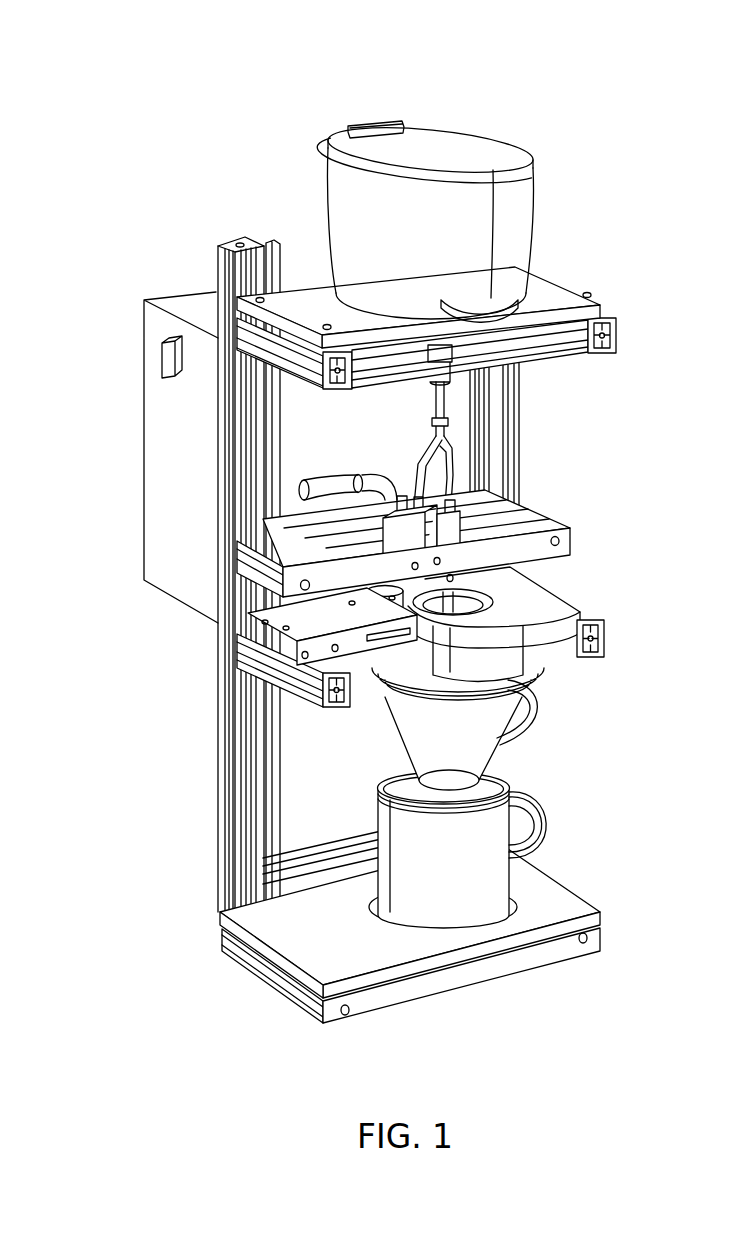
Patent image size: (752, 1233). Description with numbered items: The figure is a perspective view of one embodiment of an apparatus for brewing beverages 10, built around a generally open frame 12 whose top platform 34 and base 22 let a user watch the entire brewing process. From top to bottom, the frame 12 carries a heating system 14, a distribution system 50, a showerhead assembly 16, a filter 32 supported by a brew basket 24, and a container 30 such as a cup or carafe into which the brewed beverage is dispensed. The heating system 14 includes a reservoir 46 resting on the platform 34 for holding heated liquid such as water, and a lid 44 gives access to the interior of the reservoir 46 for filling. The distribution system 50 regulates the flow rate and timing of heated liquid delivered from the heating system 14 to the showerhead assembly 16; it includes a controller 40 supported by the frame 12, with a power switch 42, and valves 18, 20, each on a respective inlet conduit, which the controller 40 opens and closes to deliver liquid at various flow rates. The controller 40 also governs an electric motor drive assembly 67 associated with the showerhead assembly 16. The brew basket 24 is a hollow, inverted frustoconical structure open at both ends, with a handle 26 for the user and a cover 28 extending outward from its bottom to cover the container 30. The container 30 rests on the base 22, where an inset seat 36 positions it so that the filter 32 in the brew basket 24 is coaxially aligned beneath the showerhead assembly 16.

The apparatus for brewing beverages 10 is at (377, 513).
The frame 12 is at (216, 264).
The heating system 14 is at (472, 202).
The showerhead assembly 16 is at (545, 592).
The valve 18 is at (405, 512).
The valve 20 is at (462, 516).
The base 22 is at (548, 968).
The brew basket 24 is at (392, 733).
The handle 26 is at (528, 713).
The cover 28 is at (508, 788).
The container 30 is at (545, 832).
The filter 32 is at (548, 672).
The platform 34 is at (602, 300).
The seat 36 is at (513, 900).
The controller 40 is at (144, 440).
The power switch 42 is at (160, 350).
The lid 44 is at (533, 153).
The reservoir 46 is at (531, 232).
The distribution system 50 is at (447, 431).
The electric motor drive assembly 67 is at (248, 628).